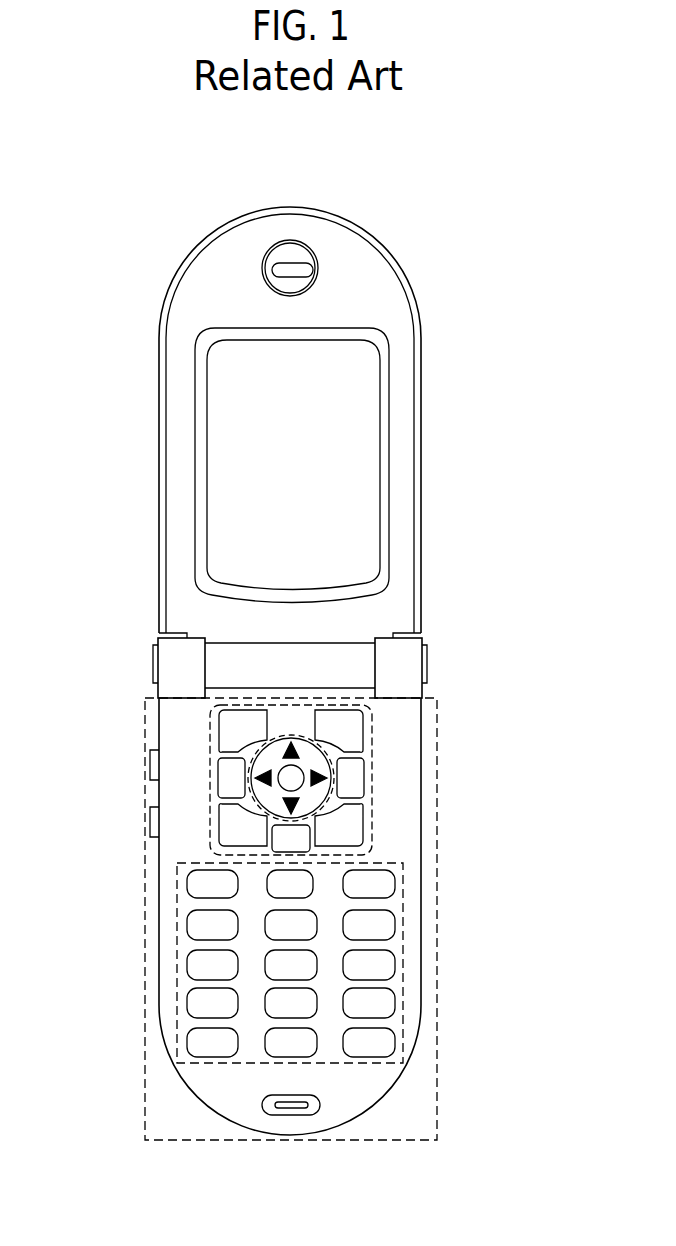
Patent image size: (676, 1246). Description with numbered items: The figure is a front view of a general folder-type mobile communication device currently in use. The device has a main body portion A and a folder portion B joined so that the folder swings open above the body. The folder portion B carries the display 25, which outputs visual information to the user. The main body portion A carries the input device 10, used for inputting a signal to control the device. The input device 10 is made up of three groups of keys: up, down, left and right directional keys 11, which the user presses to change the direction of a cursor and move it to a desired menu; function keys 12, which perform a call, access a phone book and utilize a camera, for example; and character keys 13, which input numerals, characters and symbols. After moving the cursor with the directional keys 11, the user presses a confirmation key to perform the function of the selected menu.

The input device 10 is at (437, 1060).
The directional keys 11 is at (312, 753).
The function keys 12 is at (373, 800).
The character keys 13 is at (403, 962).
The display 25 is at (228, 492).
The main body portion A is at (218, 1107).
The folder portion B is at (421, 407).